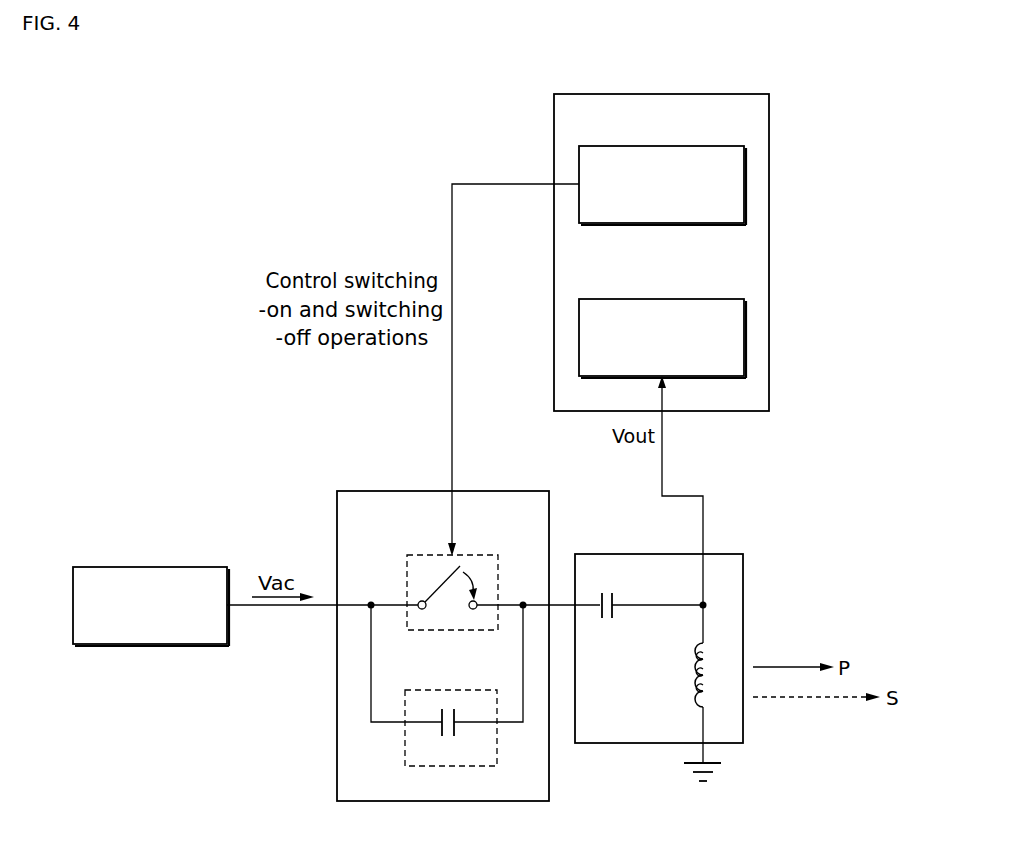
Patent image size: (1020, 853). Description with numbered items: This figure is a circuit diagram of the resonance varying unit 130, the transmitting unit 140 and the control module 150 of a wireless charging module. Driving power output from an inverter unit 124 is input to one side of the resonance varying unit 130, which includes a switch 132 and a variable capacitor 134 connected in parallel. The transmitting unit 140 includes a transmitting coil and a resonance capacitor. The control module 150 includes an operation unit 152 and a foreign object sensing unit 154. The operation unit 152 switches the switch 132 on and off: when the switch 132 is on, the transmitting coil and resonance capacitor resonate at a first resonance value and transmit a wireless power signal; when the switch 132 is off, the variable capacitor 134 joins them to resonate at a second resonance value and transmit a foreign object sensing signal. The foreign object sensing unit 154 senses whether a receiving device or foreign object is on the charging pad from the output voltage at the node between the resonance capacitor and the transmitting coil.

The inverter unit 124 is at (178, 567).
The resonance varying unit 130 is at (498, 491).
The switch 132 is at (472, 555).
The variable capacitor 134 is at (450, 690).
The transmitting unit 140 is at (723, 554).
The control module 150 is at (735, 94).
The operation unit 152 is at (697, 146).
The foreign object sensing unit 154 is at (697, 299).